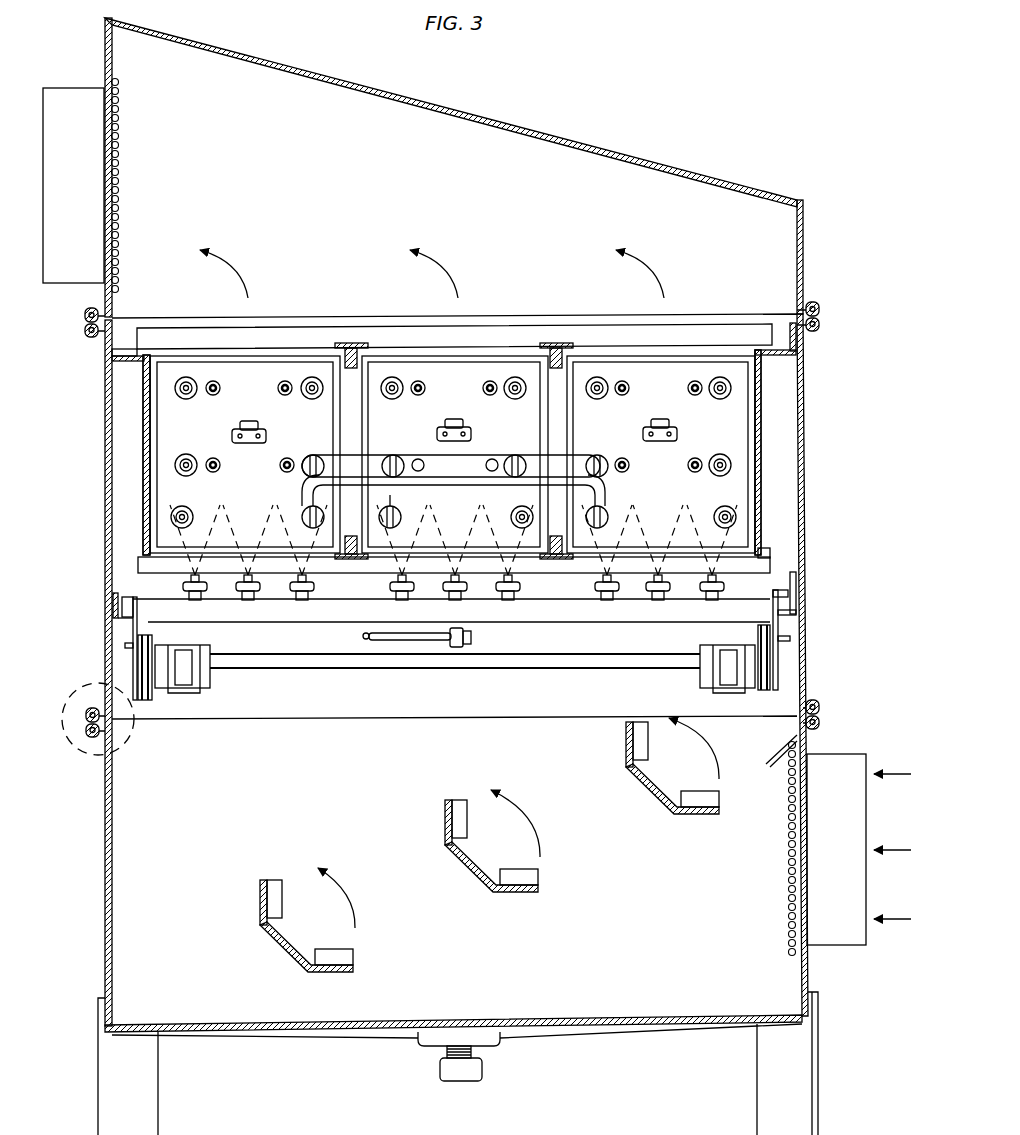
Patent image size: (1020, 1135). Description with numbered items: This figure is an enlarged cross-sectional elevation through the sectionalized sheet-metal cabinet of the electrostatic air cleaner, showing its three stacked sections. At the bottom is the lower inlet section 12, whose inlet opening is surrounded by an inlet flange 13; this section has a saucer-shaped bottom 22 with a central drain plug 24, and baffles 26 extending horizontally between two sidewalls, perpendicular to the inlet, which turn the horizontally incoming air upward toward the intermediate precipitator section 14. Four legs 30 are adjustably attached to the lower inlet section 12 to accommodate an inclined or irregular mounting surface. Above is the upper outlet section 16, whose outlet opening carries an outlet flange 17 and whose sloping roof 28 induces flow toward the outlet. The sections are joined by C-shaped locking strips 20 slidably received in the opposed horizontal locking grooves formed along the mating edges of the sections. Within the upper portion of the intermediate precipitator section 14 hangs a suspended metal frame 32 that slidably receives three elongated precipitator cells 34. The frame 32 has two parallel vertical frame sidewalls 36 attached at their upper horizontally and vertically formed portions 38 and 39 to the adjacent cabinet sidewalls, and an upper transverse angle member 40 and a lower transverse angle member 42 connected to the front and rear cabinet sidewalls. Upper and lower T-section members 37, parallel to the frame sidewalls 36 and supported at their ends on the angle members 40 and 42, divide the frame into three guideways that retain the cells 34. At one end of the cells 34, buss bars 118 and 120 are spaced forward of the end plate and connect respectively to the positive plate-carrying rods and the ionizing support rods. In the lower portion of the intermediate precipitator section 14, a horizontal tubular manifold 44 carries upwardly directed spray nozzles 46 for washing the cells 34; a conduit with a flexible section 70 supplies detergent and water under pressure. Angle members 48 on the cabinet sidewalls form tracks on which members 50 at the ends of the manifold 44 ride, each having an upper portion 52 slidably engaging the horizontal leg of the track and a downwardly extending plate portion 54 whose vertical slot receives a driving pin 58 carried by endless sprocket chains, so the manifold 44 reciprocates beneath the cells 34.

The lower inlet section 12 is at (106, 872).
The inlet flange 13 is at (842, 945).
The intermediate precipitator section 14 is at (105, 494).
The upper outlet section 16 is at (104, 48).
The outlet flange 17 is at (46, 184).
The locking strip 20 is at (86, 316).
The saucer-shaped bottom 22 is at (552, 1034).
The drain plug 24 is at (470, 1082).
The baffles 26 is at (472, 870).
The sloping roof 28 is at (440, 108).
The legs 30 is at (97, 1100).
The suspended metal frame 32 is at (768, 404).
The precipitator cells 34 is at (280, 368).
The frame sidewalls 36 is at (140, 428).
The T-section members 37 is at (351, 345).
The horizontally formed portion 38 is at (140, 370).
The vertically formed portion 39 is at (135, 353).
The upper transverse angle member 40 is at (462, 326).
The lower transverse angle member 42 is at (536, 568).
The tubular manifold 44 is at (540, 620).
The spray nozzles 46 is at (612, 600).
The angle members 48 is at (795, 580).
The members 50 is at (785, 655).
The upper portion 52 is at (128, 594).
The plate portion 54 is at (140, 662).
The driving pin 58 is at (780, 640).
The flexible section 70 is at (362, 636).
The buss bar 118 is at (462, 455).
The buss bar 120 is at (594, 500).